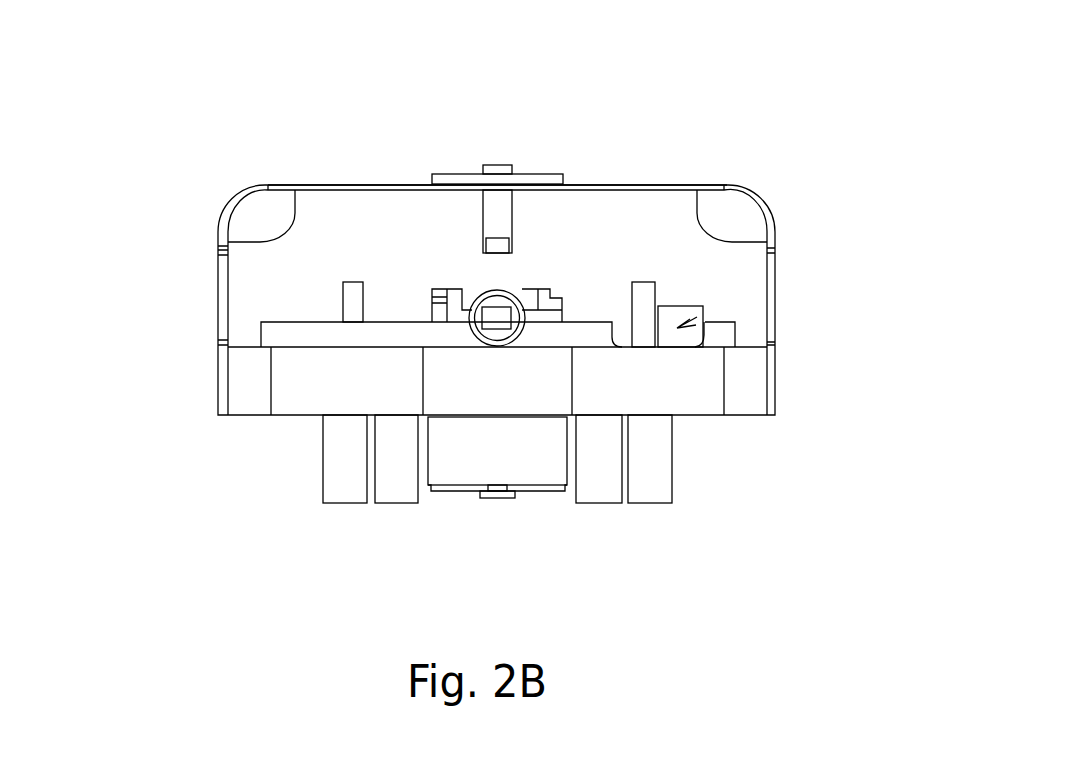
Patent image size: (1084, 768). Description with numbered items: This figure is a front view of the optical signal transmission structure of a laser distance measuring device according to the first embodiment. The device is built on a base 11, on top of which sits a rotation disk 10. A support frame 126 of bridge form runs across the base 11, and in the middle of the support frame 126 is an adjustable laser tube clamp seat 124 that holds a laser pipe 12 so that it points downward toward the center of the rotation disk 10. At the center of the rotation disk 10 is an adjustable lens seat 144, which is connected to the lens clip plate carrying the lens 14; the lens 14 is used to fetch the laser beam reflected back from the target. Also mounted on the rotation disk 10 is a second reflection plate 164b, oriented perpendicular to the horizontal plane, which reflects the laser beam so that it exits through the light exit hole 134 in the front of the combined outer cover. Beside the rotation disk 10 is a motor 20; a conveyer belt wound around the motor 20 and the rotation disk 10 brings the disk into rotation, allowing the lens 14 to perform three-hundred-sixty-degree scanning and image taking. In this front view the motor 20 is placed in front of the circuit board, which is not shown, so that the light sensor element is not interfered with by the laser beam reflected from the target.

The rotation disk 10 is at (270, 336).
The base 11 is at (755, 388).
The laser pipe 12 is at (508, 205).
The lens 14 is at (510, 313).
The motor 20 is at (540, 476).
The adjustable laser tube clamp seat 124 is at (468, 174).
The support frame 126 is at (278, 185).
The light exit hole 134 is at (705, 322).
The adjustable lens seat 144 is at (440, 288).
The second reflection plate 164b is at (685, 305).